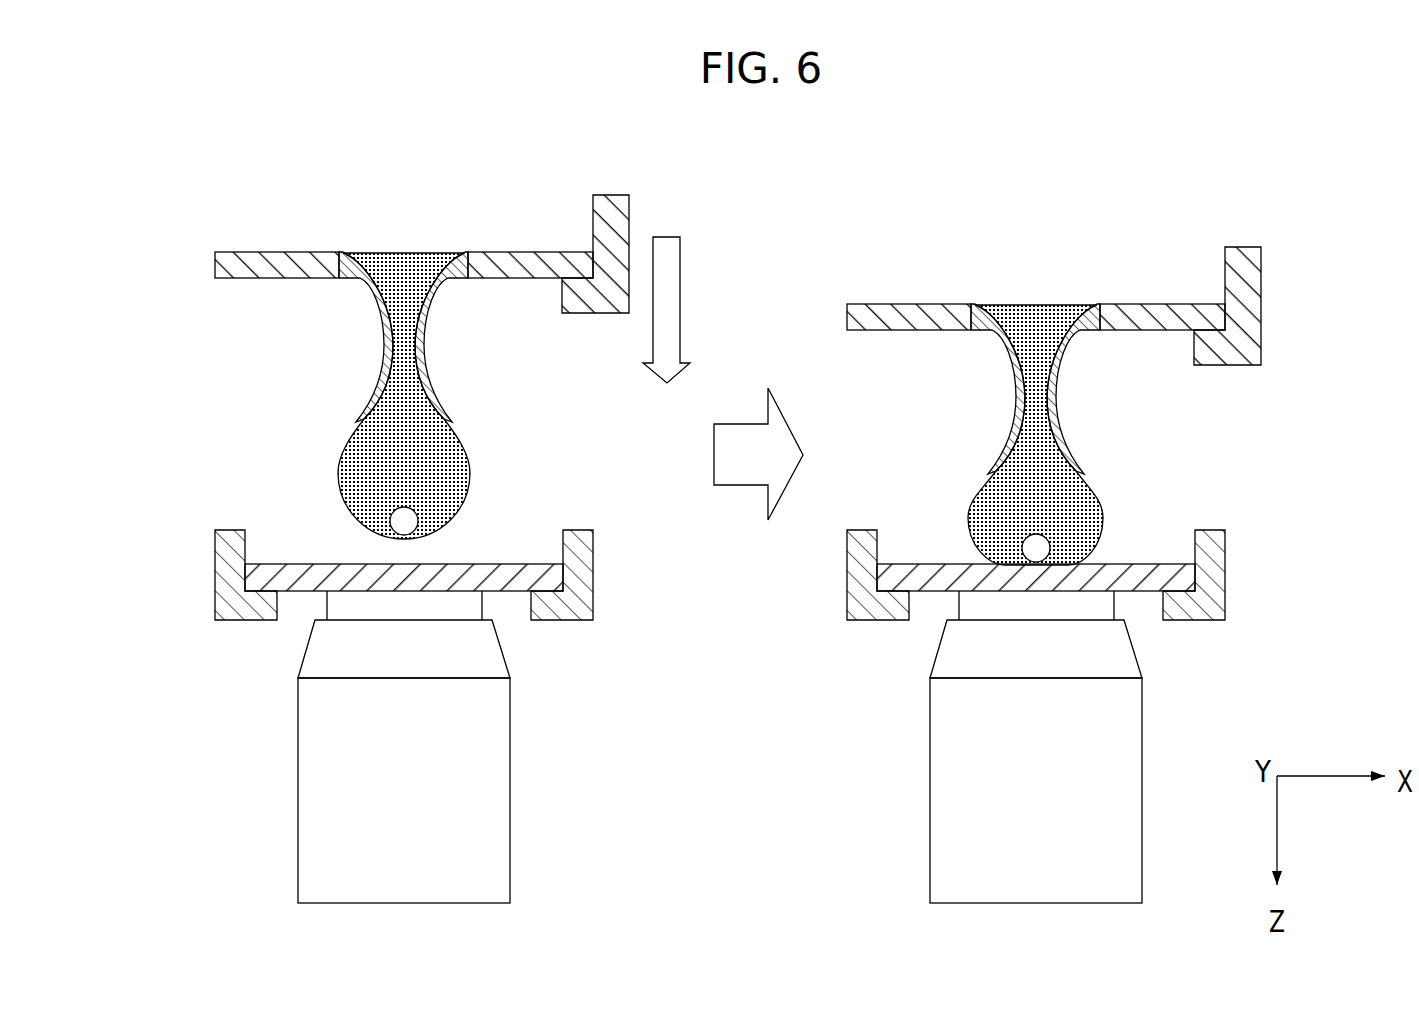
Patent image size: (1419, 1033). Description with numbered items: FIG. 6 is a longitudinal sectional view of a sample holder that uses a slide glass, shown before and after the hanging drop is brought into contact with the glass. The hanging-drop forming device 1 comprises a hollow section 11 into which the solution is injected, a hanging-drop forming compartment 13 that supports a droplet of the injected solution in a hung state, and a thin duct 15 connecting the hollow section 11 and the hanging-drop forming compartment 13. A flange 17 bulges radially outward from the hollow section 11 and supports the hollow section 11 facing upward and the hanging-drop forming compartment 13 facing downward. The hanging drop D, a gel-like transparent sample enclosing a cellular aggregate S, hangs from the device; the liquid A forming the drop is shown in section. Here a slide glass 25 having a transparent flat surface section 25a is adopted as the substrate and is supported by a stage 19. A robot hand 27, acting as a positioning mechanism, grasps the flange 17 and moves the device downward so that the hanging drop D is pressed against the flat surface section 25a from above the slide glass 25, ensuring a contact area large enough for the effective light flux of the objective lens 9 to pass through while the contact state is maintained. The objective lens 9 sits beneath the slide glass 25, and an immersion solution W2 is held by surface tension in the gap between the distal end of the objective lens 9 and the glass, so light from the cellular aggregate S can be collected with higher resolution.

The hanging-drop forming device 1 is at (185, 205).
The objective lens 9 is at (298, 795).
The hollow section 11 is at (350, 262).
The hanging-drop forming compartment 13 is at (365, 398).
The thin duct 15 is at (385, 345).
The flange 17 is at (523, 258).
The stage 19 is at (597, 580).
The slide glass 25 is at (290, 555).
The flat surface section 25a is at (370, 578).
The robot hand 27 is at (622, 212).
The liquid A is at (440, 455).
The hanging drop D is at (478, 487).
The cellular aggregate S is at (405, 521).
The immersion solution W2 is at (340, 601).